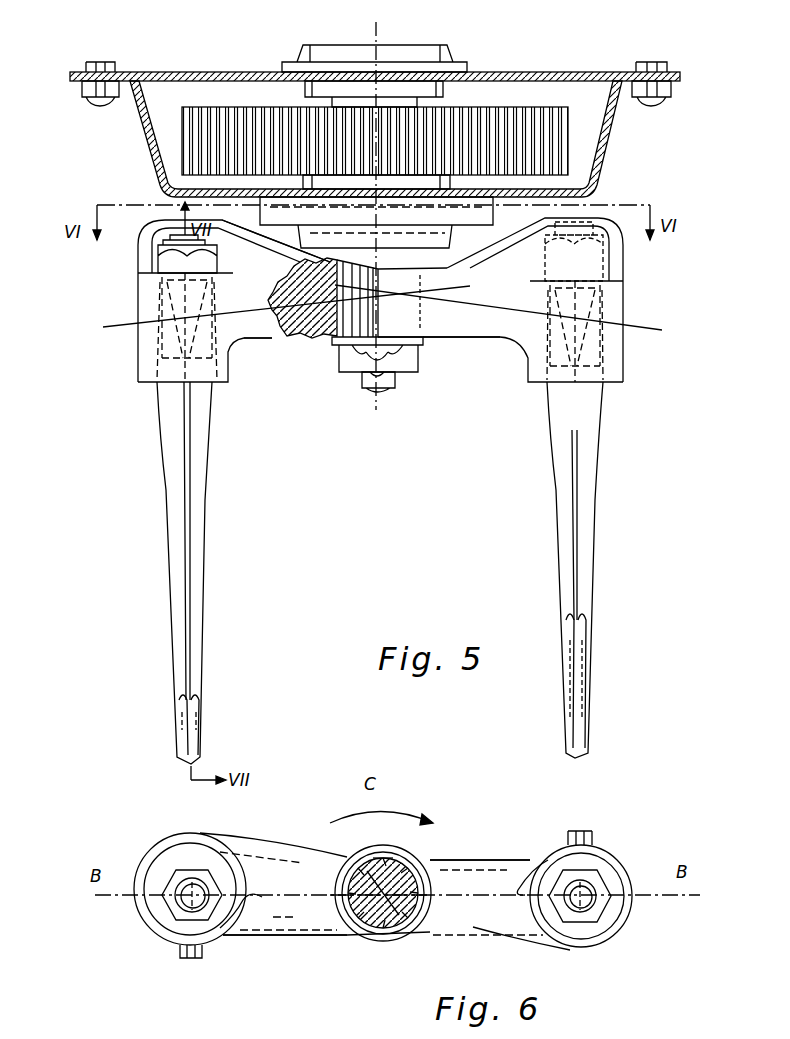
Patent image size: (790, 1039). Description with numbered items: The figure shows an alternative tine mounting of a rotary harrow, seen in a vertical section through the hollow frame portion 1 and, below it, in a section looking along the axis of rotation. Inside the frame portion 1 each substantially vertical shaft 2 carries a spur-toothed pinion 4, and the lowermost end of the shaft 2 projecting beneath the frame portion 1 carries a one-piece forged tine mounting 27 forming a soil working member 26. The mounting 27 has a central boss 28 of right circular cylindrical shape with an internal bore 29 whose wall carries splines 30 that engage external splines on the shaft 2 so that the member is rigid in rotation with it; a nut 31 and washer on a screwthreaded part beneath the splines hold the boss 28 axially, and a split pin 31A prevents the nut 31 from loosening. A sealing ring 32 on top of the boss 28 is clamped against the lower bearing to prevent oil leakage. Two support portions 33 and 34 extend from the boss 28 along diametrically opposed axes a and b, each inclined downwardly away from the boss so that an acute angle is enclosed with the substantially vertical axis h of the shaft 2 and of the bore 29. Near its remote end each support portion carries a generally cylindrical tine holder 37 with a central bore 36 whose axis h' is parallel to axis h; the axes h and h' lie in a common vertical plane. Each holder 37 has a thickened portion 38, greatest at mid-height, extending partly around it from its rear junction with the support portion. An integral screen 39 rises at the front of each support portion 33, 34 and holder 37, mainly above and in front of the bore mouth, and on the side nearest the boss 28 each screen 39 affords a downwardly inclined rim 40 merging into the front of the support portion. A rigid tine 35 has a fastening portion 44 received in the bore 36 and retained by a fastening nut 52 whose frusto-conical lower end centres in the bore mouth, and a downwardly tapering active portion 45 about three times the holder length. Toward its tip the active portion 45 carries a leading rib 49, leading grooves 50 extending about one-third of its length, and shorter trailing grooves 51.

In FIG. 5, the frame portion 1 is at (128, 120).
In FIG. 5, the shaft 2 is at (368, 396).
In FIG. 6, the shaft 2 is at (362, 928).
In FIG. 5, the pinion 4 is at (182, 118).
In FIG. 5, the rocker arm assembly 26 is at (374, 342).
In FIG. 5, the tine mounting 27 is at (302, 342).
In FIG. 6, the tine mounting 27 is at (288, 940).
In FIG. 5, the central boss 28 is at (393, 318).
In FIG. 6, the central boss 28 is at (378, 846).
In FIG. 5, the bore 29 is at (327, 334).
In FIG. 6, the bore 29 is at (378, 928).
In FIG. 5, the splines 30 is at (362, 298).
In FIG. 6, the splines 30 is at (411, 924).
In FIG. 5, the nut 31 is at (410, 360).
In FIG. 5, the split pin 31A is at (378, 396).
In FIG. 5, the sealing ring 32 is at (430, 240).
In FIG. 5, the support portion 33 is at (510, 336).
In FIG. 6, the support portion 33 is at (465, 860).
In FIG. 5, the support portion 34 is at (262, 344).
In FIG. 6, the support portion 34 is at (310, 940).
In FIG. 5, the soil working tine 35 is at (168, 548).
In FIG. 5, the central bore 36 is at (606, 262).
In FIG. 5, the tine holder 37 is at (138, 356).
In FIG. 6, the thickened portion 38 is at (150, 878).
In FIG. 5, the screen 39 is at (136, 245).
In FIG. 6, the screen 39 is at (208, 834).
In FIG. 6, the rim 40 is at (254, 836).
In FIG. 5, the fastening portion 44 is at (140, 291).
In FIG. 5, the active portion 45 is at (205, 498).
In FIG. 5, the rib 49 is at (576, 580).
In FIG. 5, the leading grooves 50 is at (567, 708).
In FIG. 5, the trailing grooves 51 is at (178, 712).
In FIG. 6, the fastening nut 52 is at (170, 905).
In FIG. 5, the longitudinal axis a is at (508, 311).
In FIG. 5, the longitudinal axis b is at (281, 306).
In FIG. 5, the longitudinal axis h is at (386, 208).
In FIG. 6, the longitudinal axis h is at (367, 911).
In FIG. 6, the longitudinal axis h' is at (386, 895).